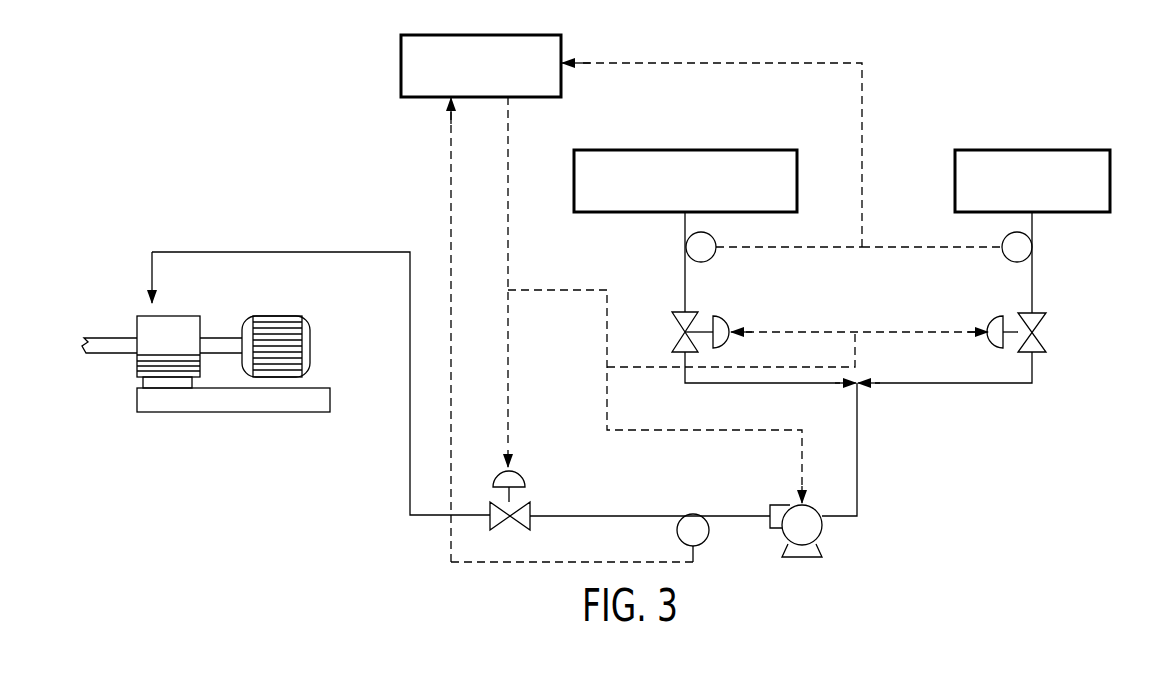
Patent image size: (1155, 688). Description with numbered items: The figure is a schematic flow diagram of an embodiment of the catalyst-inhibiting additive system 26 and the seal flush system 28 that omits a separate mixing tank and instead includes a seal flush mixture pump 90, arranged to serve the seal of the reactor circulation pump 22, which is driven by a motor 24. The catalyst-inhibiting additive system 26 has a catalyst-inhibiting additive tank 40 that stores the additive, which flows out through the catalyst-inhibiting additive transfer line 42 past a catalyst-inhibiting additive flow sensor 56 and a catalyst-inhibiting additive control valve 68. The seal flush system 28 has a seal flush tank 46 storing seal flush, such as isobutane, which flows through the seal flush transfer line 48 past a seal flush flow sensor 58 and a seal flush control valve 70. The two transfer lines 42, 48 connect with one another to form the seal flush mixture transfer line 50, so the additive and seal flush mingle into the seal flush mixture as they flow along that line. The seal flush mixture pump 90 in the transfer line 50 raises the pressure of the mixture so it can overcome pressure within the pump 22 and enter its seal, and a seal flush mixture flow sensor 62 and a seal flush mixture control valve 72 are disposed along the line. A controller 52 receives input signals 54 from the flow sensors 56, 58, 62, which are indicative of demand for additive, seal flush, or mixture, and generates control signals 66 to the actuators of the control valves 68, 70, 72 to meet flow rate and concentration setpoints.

The pump 22 is at (137, 366).
The motor 24 is at (309, 340).
The catalyst-inhibiting additive system 26 is at (712, 116).
The seal flush system 28 is at (1040, 105).
The catalyst-inhibiting additive tank 40 is at (783, 150).
The catalyst-inhibiting additive transfer line 42 is at (726, 385).
The seal flush tank 46 is at (1085, 150).
The seal flush transfer line 48 is at (1003, 384).
The seal flush mixture transfer line 50 is at (857, 474).
The controller 52 is at (546, 36).
The input signals 54 is at (451, 178).
The catalyst-inhibiting additive flow sensor 56 is at (704, 261).
The seal flush flow sensor 58 is at (1013, 262).
The seal flush mixture flow sensor 62 is at (705, 545).
The control signals 66 is at (508, 232).
The catalyst-inhibiting additive control valve 68 is at (716, 316).
The seal flush control valve 70 is at (1000, 316).
The seal flush mixture control valve 72 is at (521, 476).
The seal flush mixture pump 90 is at (815, 557).